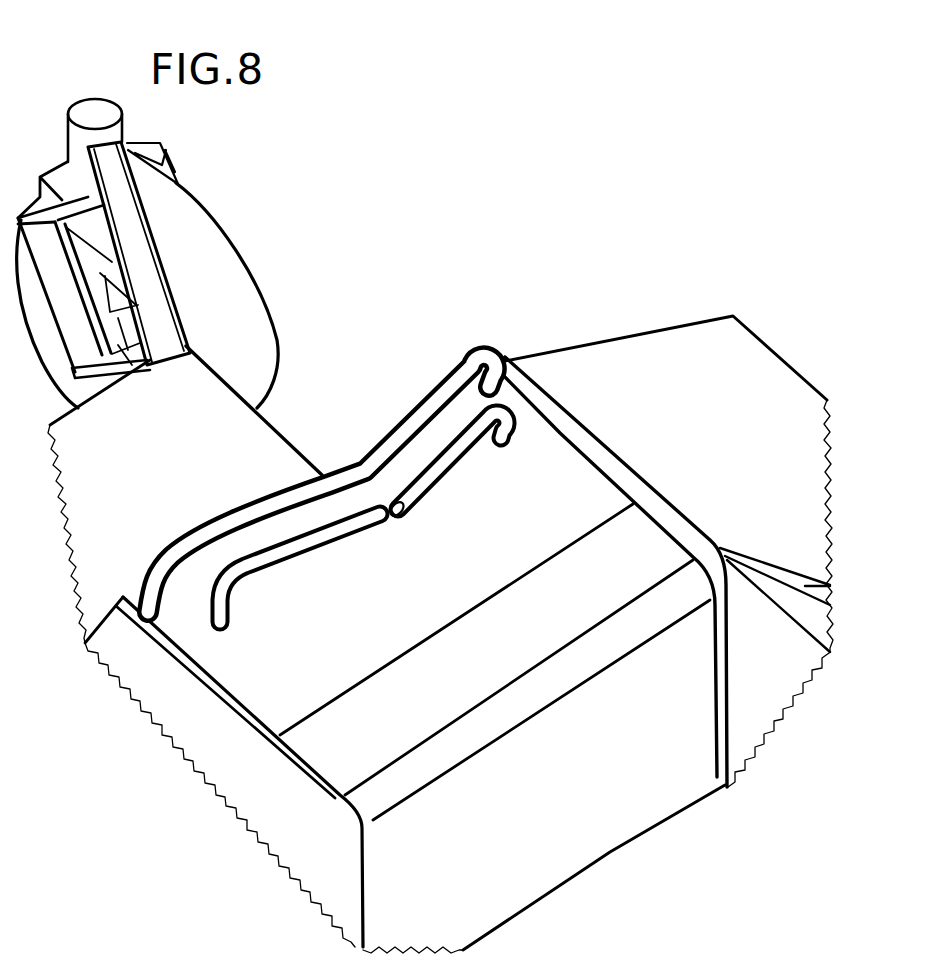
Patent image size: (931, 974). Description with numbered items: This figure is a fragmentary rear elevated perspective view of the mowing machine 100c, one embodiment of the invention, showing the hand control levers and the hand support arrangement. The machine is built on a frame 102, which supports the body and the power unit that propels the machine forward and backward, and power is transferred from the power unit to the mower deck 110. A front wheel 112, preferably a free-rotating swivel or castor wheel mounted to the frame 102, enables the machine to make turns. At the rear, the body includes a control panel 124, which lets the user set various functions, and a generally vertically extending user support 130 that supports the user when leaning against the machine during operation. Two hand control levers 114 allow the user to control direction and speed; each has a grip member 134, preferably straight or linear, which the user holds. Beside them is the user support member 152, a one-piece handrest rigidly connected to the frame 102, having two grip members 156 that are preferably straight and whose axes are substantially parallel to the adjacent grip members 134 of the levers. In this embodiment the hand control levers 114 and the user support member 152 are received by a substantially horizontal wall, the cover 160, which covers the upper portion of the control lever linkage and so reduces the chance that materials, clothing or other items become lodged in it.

The mowing machine 100c is at (549, 198).
The frame 102 is at (298, 444).
The mower deck 110 is at (599, 334).
The front wheel 112 is at (246, 260).
The hand control lever 114 is at (382, 543).
The control panel 124 is at (494, 662).
The user support 130 is at (547, 800).
The grip member 134 is at (452, 462).
The user support member 152 is at (356, 458).
The grip member 156 is at (422, 403).
The cover 160 is at (564, 484).